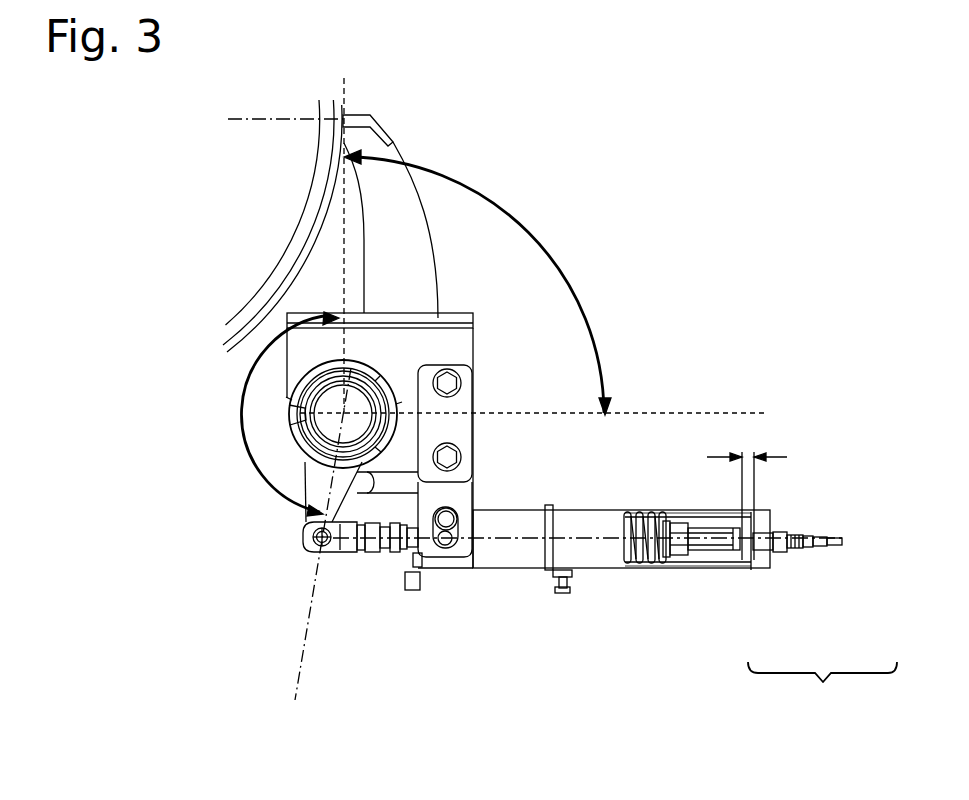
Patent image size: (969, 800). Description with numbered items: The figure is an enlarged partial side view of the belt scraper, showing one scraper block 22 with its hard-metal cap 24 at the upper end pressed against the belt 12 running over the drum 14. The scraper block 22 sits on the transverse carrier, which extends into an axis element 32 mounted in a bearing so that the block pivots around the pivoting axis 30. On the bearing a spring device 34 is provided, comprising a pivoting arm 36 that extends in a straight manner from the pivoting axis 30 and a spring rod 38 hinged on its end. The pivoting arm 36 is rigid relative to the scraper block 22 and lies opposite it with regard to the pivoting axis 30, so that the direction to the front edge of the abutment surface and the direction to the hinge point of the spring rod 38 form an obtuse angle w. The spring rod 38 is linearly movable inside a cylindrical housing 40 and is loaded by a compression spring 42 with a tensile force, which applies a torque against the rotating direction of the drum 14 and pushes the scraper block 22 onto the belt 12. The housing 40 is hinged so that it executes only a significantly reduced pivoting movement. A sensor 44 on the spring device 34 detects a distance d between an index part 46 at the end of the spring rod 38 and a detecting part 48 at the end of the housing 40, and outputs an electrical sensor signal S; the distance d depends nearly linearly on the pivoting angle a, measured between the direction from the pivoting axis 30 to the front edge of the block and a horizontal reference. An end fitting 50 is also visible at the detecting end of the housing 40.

The belt 12 is at (248, 328).
The drum 14 is at (302, 227).
The scraper block 22 is at (417, 255).
The cap 24 is at (368, 115).
The pivoting axis 30 is at (342, 415).
The axis element 32 is at (367, 382).
The spring device 34 is at (272, 582).
The pivoting arm 36 is at (313, 494).
The spring rod 38 is at (413, 538).
The cylindrical housing 40 is at (683, 570).
The compression spring 42 is at (638, 510).
The sensor 44 is at (822, 691).
The index part 46 is at (737, 545).
The detecting part 48 is at (773, 547).
The end fitting 50 is at (822, 535).
The pivoting angle a is at (477, 282).
The obtuse angle w is at (276, 414).
The distance d is at (747, 491).
The sensor signal S is at (842, 543).